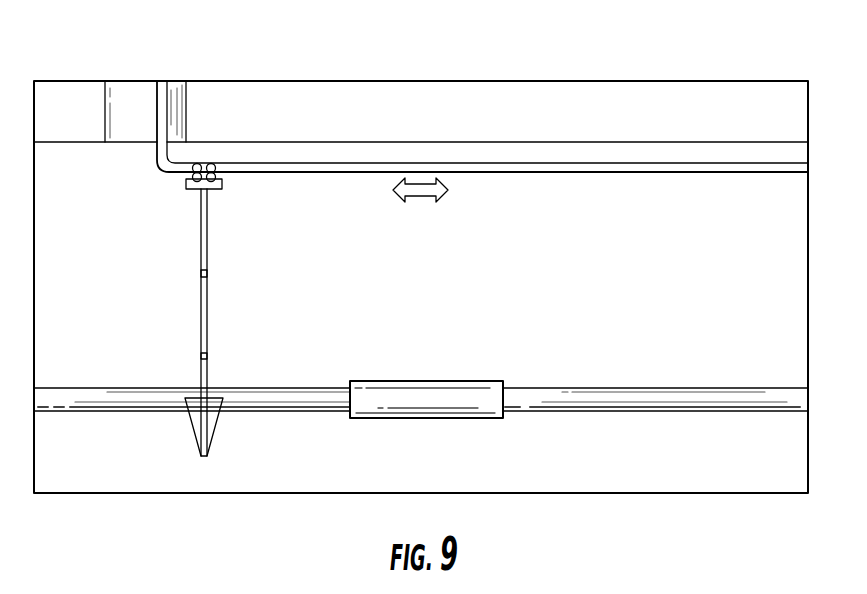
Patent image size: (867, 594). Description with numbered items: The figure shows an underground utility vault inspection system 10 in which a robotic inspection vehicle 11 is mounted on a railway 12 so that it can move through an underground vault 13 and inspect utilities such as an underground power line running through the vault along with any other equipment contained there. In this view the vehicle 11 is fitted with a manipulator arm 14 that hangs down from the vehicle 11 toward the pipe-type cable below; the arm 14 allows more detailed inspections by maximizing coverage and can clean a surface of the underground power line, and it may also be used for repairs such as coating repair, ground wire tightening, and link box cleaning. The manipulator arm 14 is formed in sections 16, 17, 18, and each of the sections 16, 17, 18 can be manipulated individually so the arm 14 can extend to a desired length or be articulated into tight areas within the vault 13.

The underground utility vault inspection system 10 is at (540, 59).
The robotic inspection vehicle 11 is at (222, 183).
The railway 12 is at (490, 167).
The underground vault 13 is at (623, 196).
The manipulator arm 14 is at (201, 262).
The section 16 is at (207, 213).
The section 17 is at (201, 325).
The section 18 is at (201, 377).